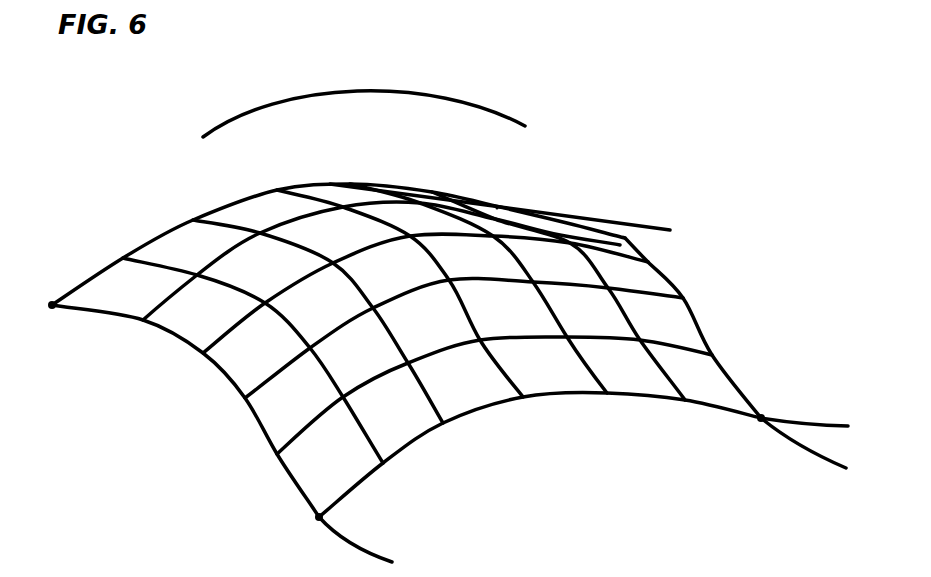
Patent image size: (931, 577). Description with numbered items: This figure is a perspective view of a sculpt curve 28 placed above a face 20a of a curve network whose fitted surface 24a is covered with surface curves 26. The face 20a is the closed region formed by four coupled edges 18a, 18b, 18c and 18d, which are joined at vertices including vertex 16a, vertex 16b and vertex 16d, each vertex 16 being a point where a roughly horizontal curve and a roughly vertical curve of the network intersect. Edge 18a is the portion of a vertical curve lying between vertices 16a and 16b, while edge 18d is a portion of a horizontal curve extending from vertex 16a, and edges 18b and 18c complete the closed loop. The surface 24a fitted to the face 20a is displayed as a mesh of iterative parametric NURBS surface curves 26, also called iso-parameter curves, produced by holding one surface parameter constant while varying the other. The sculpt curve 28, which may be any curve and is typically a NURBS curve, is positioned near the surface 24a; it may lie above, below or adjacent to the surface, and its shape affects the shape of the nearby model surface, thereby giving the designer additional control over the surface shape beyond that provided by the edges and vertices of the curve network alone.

The vertices 16 is at (765, 417).
The vertex 16a is at (52, 302).
The vertex 16b is at (324, 517).
The vertex 16d is at (496, 209).
The edge 18a is at (220, 373).
The edge 18b is at (537, 398).
The edge 18c is at (683, 298).
The edge 18d is at (355, 183).
The face 20a is at (432, 195).
The surface 24a is at (172, 254).
The surface curves 26 is at (407, 240).
The sculpt curve 28 is at (410, 91).